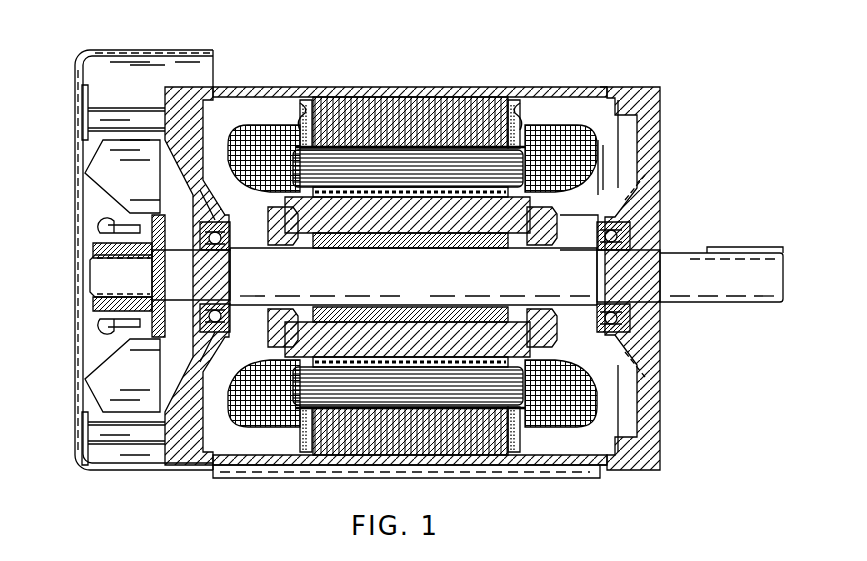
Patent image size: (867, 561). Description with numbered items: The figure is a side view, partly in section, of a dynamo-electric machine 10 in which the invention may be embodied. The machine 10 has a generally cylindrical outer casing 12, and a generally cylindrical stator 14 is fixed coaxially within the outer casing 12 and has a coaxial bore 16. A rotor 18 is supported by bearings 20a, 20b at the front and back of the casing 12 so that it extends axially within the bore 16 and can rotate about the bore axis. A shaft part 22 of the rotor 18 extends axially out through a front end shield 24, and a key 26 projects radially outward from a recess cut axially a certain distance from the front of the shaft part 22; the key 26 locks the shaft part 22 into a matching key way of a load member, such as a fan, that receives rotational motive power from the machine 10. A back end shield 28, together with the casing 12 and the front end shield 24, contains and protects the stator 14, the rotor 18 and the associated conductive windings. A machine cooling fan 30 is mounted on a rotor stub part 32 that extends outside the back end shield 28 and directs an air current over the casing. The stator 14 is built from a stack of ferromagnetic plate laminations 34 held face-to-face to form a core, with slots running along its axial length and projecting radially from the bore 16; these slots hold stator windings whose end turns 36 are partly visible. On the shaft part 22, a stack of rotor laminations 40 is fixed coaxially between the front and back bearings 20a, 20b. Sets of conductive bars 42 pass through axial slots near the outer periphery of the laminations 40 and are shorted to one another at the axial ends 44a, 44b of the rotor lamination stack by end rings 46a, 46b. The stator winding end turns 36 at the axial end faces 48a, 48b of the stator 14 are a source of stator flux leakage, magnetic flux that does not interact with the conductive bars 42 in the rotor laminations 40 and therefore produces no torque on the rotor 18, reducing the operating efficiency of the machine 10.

The dynamo-electric machine 10 is at (348, 52).
The outer casing 12 is at (450, 88).
The stator 14 is at (512, 105).
The coaxial bore 16 is at (430, 197).
The rotor 18 is at (565, 220).
The front bearing 20a is at (608, 250).
The back bearing 20b is at (208, 250).
The shaft part 22 is at (678, 253).
The front end shield 24 is at (655, 130).
The key 26 is at (740, 247).
The back end shield 28 is at (175, 88).
The machine cooling fan 30 is at (85, 182).
The rotor stub part 32 is at (95, 278).
The plate laminations 34 is at (328, 84).
The stator winding end turns 36 is at (582, 170).
The rotor laminations 40 is at (398, 250).
The conductive bars 42 is at (338, 249).
The axial end of rotor lamination stack 44a is at (506, 276).
The axial end of rotor lamination stack 44b is at (322, 276).
The end ring 46a is at (535, 228).
The end ring 46b is at (278, 184).
The axial end face of stator 48a is at (518, 112).
The axial end face of stator 48b is at (302, 112).